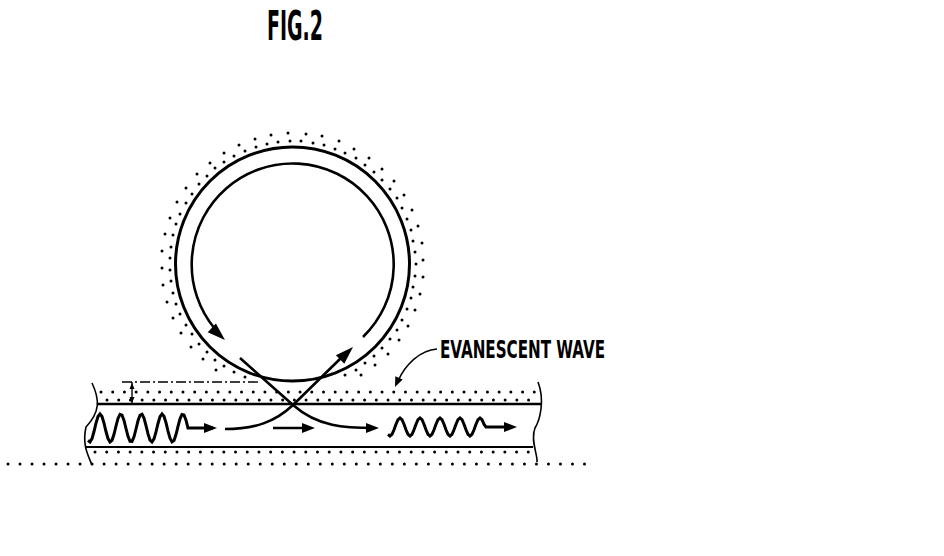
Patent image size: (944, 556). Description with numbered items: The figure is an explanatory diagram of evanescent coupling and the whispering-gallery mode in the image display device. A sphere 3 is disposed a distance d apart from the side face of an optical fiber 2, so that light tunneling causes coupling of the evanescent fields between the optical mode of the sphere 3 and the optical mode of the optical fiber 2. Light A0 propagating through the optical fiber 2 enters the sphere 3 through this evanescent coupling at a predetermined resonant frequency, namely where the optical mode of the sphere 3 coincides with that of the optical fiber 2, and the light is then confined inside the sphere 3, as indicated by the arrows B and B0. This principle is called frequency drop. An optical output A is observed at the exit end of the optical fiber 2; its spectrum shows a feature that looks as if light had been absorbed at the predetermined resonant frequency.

The optical fiber 2 is at (508, 447).
The sphere 3 is at (334, 148).
The distance d is at (130, 392).
The light A0 is at (190, 430).
The optical output A is at (392, 430).
The arrow indicating confined light B0 is at (305, 378).
The arrow indicating confined light B is at (289, 376).